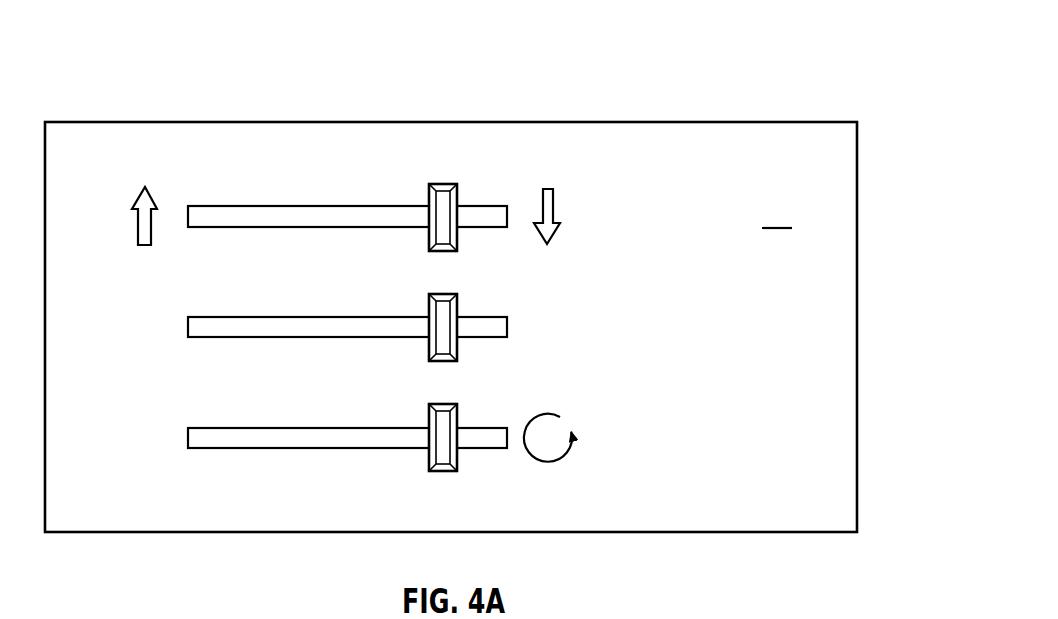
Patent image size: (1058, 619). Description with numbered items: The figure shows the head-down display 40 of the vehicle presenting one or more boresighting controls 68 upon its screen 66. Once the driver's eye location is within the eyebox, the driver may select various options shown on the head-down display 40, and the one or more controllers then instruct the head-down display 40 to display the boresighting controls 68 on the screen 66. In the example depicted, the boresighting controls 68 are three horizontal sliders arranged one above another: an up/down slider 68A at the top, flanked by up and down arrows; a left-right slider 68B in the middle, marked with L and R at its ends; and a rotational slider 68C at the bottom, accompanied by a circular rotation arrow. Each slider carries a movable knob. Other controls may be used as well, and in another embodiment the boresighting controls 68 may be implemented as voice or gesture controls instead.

The head-down display 40 is at (823, 53).
The screen 66 is at (777, 212).
The boresighting controls 68 is at (657, 155).
The up/down slider 68A is at (490, 197).
The left-right slider 68B is at (497, 298).
The rotational slider 68C is at (497, 408).